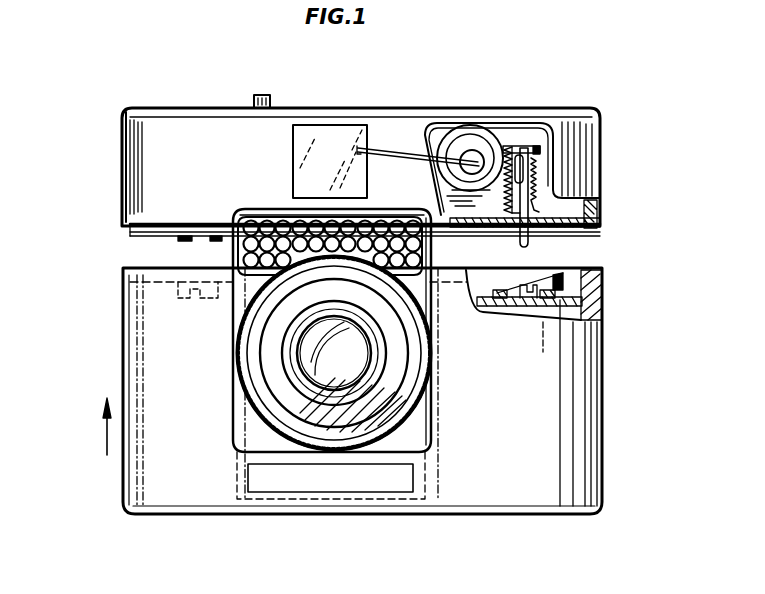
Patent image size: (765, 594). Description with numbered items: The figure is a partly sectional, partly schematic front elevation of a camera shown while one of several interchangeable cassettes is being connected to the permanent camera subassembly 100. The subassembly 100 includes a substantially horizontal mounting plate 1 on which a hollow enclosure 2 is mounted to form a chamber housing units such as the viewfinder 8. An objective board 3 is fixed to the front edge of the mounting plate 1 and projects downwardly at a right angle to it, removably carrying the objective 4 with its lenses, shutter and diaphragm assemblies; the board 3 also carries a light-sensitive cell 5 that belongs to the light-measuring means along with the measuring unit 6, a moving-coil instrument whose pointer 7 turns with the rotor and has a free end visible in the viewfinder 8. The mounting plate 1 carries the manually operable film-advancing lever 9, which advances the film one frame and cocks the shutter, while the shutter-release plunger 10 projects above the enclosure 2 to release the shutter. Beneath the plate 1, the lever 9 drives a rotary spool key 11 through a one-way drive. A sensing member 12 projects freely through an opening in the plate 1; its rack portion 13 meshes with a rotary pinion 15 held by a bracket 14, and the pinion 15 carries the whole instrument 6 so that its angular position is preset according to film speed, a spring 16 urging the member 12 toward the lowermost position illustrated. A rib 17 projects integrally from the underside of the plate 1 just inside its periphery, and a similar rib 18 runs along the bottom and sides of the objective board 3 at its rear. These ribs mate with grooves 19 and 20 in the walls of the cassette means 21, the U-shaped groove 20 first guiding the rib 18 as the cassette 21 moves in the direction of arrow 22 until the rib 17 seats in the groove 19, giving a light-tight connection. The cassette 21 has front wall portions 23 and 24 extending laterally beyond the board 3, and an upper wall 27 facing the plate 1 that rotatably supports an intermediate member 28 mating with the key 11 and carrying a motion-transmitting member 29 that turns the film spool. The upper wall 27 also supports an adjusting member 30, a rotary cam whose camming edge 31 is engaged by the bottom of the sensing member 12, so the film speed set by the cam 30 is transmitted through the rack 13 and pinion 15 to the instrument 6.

The permanent camera subassembly 100 is at (107, 180).
The mounting plate 1 is at (597, 226).
The hollow enclosure 2 is at (602, 183).
The objective board 3 is at (253, 446).
The objective 4 is at (257, 375).
The light-sensitive cell 5 is at (274, 218).
The measuring unit 6 is at (456, 150).
The pointer 7 is at (408, 154).
The viewfinder 8 is at (322, 138).
The film-advancing lever 9 is at (122, 212).
The shutter-release plunger 10 is at (270, 96).
The rotary spool key 11 is at (183, 236).
The sensing member 12 is at (526, 246).
The rack portion 13 is at (506, 212).
The bracket 14 is at (508, 128).
The rotary pinion 15 is at (477, 132).
The spring 16 is at (538, 178).
The coupling structure part 17 is at (597, 237).
The rib 18 is at (310, 457).
The groove 19 is at (592, 270).
The groove 20 is at (427, 500).
The interchangeable cassette means 21 is at (603, 462).
The arrow 22 is at (107, 440).
The front wall portion 23 is at (588, 392).
The front wall portion 24 is at (138, 333).
The upper wall 27 is at (503, 307).
The intermediate member 28 is at (157, 273).
The motion-transmitting member 29 is at (188, 298).
The adjusting member 30 is at (602, 285).
The camming edge 31 is at (510, 287).